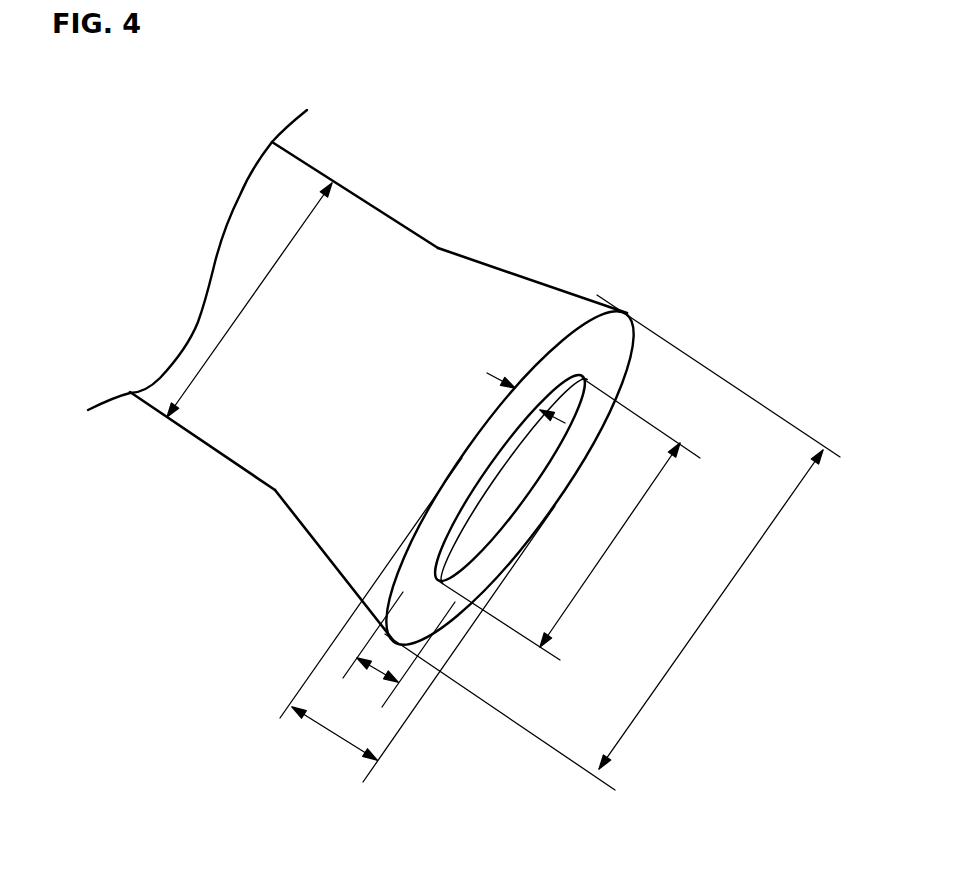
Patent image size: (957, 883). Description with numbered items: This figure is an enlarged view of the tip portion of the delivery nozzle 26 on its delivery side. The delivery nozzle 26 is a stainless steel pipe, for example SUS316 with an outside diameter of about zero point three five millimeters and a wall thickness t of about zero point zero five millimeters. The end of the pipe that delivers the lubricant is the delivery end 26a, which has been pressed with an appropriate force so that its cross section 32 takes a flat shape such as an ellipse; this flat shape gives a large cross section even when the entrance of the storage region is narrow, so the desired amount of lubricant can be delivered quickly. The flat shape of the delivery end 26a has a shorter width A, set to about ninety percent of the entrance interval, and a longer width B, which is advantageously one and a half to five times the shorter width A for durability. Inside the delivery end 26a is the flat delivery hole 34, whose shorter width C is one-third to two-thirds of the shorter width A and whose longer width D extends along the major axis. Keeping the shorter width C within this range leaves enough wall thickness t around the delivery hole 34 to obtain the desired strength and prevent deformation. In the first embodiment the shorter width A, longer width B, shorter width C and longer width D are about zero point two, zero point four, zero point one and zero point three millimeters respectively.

The delivery nozzle 26 is at (357, 220).
The delivery end 26a is at (648, 290).
The cross section 32 is at (613, 372).
The delivery hole 34 is at (532, 463).
The wall thickness t is at (531, 393).
The longer width D is at (615, 537).
The longer width B is at (718, 600).
The shorter width A is at (328, 730).
The shorter width C is at (375, 672).